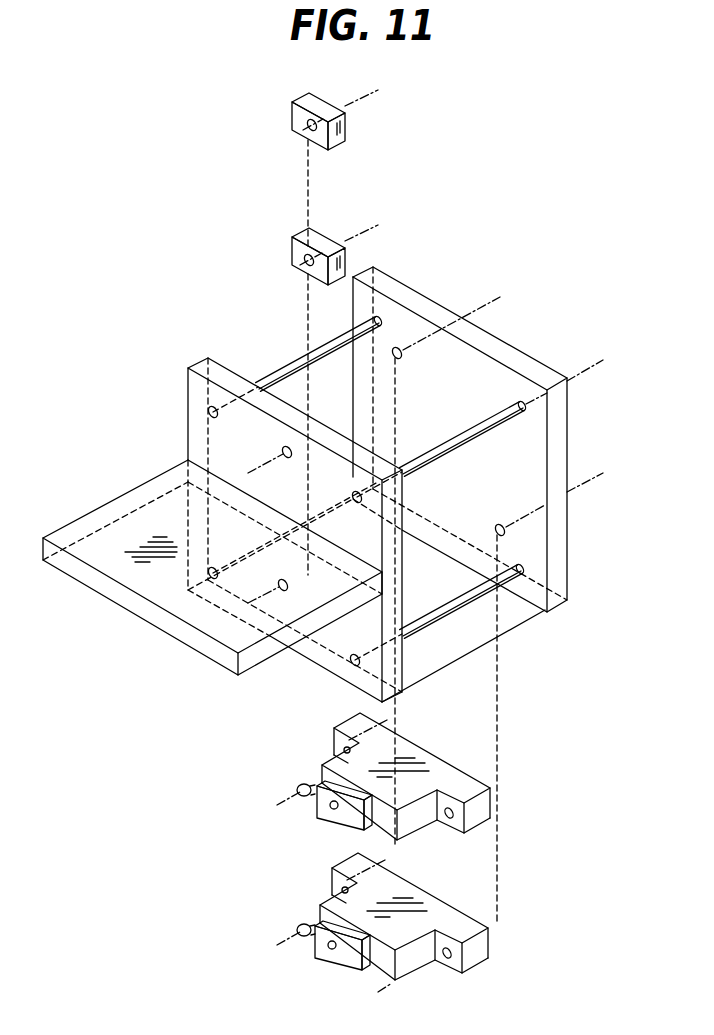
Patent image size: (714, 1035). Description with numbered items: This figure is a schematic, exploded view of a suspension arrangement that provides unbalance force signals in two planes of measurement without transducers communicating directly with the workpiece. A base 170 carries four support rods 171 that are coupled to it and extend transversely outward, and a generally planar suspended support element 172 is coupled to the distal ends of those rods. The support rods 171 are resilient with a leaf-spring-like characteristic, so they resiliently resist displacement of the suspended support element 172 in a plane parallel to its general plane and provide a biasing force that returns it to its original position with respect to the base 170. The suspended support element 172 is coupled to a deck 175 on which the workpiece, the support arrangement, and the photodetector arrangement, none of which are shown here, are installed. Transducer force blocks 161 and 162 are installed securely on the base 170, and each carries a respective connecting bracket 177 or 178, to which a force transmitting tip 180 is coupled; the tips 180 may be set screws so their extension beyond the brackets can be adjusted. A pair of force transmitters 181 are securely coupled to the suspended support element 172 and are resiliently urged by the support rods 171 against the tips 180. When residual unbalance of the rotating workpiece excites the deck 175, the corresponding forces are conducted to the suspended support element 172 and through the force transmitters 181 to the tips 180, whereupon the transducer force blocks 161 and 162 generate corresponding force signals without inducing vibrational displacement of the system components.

The transducer force block 161 is at (477, 957).
The transducer force block 162 is at (480, 815).
The base 170 is at (558, 535).
The support rods 171 is at (457, 608).
The suspended support element 172 is at (327, 673).
The deck 175 is at (175, 627).
The connecting bracket 177 is at (352, 966).
The connecting bracket 178 is at (320, 767).
The force transmitting tip 180 is at (300, 793).
The force transmitters 181 is at (300, 130).